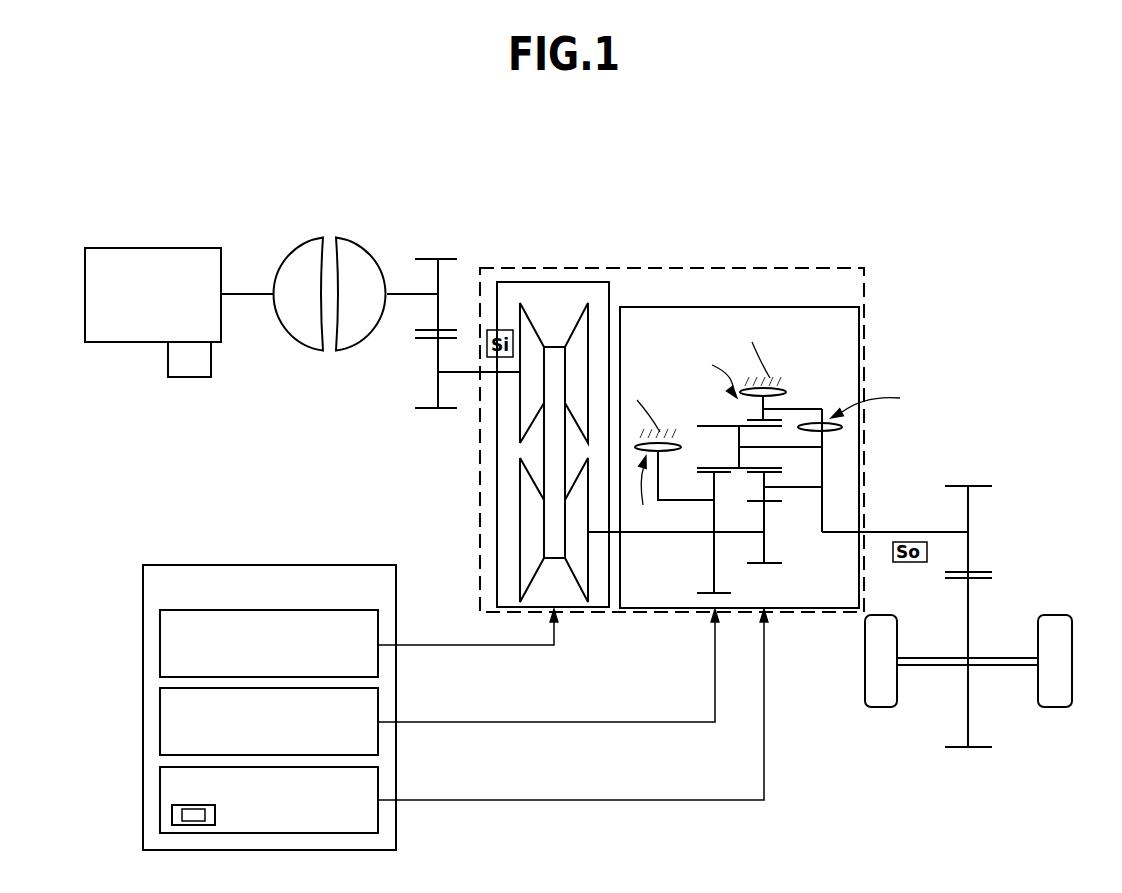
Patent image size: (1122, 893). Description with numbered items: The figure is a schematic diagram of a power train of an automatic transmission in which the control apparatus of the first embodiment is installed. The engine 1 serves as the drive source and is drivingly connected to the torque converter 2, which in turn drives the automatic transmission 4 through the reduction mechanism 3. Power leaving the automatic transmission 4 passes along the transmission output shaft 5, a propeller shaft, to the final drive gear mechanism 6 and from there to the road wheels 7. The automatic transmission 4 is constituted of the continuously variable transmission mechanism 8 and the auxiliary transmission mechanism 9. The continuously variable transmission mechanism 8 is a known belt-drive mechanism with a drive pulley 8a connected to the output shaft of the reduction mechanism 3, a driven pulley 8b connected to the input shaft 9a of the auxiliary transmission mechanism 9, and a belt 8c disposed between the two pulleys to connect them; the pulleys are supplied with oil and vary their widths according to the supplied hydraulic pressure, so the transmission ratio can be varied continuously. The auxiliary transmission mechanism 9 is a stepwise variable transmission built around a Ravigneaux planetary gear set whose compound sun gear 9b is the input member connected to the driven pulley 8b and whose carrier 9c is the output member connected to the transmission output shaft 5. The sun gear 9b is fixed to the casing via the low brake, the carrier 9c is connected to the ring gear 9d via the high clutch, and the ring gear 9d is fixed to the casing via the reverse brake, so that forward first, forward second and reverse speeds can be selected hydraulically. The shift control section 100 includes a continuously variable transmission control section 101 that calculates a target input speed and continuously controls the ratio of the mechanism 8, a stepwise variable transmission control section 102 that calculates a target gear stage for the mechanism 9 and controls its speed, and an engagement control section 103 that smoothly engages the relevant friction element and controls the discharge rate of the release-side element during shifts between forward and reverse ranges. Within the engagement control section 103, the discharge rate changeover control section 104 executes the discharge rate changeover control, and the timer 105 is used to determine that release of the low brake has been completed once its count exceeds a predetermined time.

The engine 1 is at (147, 248).
The torque converter 2 is at (276, 244).
The reduction mechanism 3 is at (425, 244).
The automatic transmission 4 is at (718, 268).
The transmission output shaft 5 is at (880, 530).
The final drive gear mechanism 6 is at (1002, 504).
The road wheels 7 is at (882, 708).
The continuously variable transmission mechanism 8 is at (510, 481).
The drive pulley 8a is at (506, 421).
The driven pulley 8b is at (506, 527).
The belt 8c is at (527, 452).
The auxiliary transmission mechanism 9 is at (784, 490).
The input shaft 9a is at (668, 537).
The compound sun gear 9b is at (740, 590).
The carrier 9c is at (838, 459).
The ring gear 9d is at (747, 420).
The shift control section 100 is at (268, 565).
The continuously variable transmission control section 101 is at (158, 645).
The stepwise variable transmission control section 102 is at (158, 722).
The engagement control section 103 is at (158, 785).
The discharge rate changeover control section 104 is at (172, 812).
The timer 105 is at (182, 818).